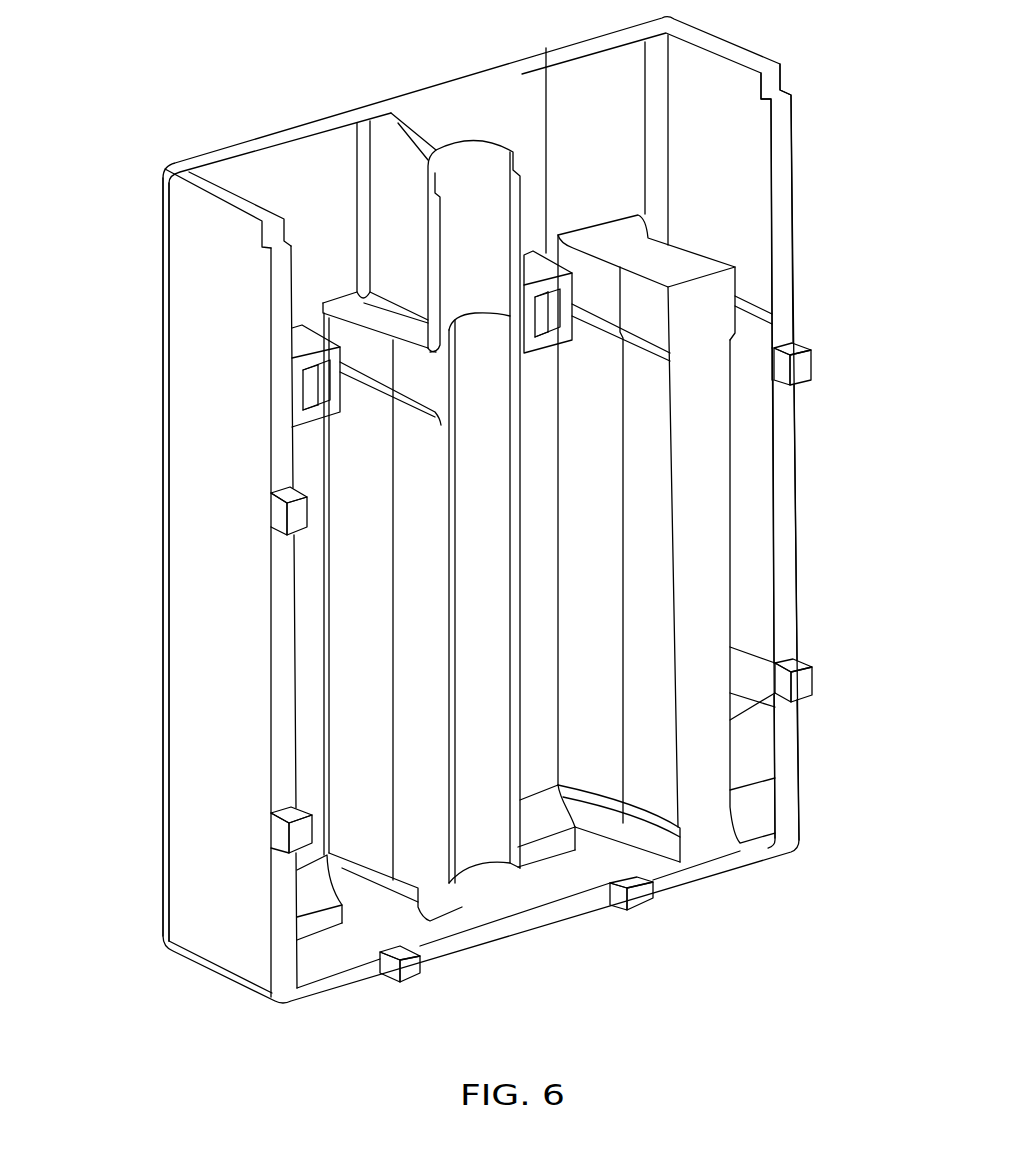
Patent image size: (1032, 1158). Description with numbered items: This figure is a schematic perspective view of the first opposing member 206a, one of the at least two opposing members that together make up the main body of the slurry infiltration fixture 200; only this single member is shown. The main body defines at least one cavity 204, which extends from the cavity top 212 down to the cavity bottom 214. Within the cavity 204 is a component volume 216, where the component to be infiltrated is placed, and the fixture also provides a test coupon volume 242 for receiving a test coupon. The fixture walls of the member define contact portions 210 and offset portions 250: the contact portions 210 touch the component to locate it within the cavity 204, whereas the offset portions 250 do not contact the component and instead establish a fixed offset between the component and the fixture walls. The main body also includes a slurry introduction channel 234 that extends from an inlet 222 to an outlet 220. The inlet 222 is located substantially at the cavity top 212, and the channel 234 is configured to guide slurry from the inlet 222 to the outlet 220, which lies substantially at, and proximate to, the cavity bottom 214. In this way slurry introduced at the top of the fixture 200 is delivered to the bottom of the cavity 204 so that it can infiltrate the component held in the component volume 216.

The slurry infiltration fixture 200 is at (143, 38).
The cavity 204 is at (340, 517).
The first opposing member 206a is at (186, 330).
The contact portions 210 is at (570, 292).
The cavity top 212 is at (722, 77).
The cavity bottom 214 is at (316, 949).
The component volume 216 is at (588, 663).
The outlet 220 is at (498, 889).
The inlet 222 is at (481, 208).
The slurry introduction channel 234 is at (259, 194).
The test coupon volume 242 is at (749, 419).
The offset portions 250 is at (533, 536).